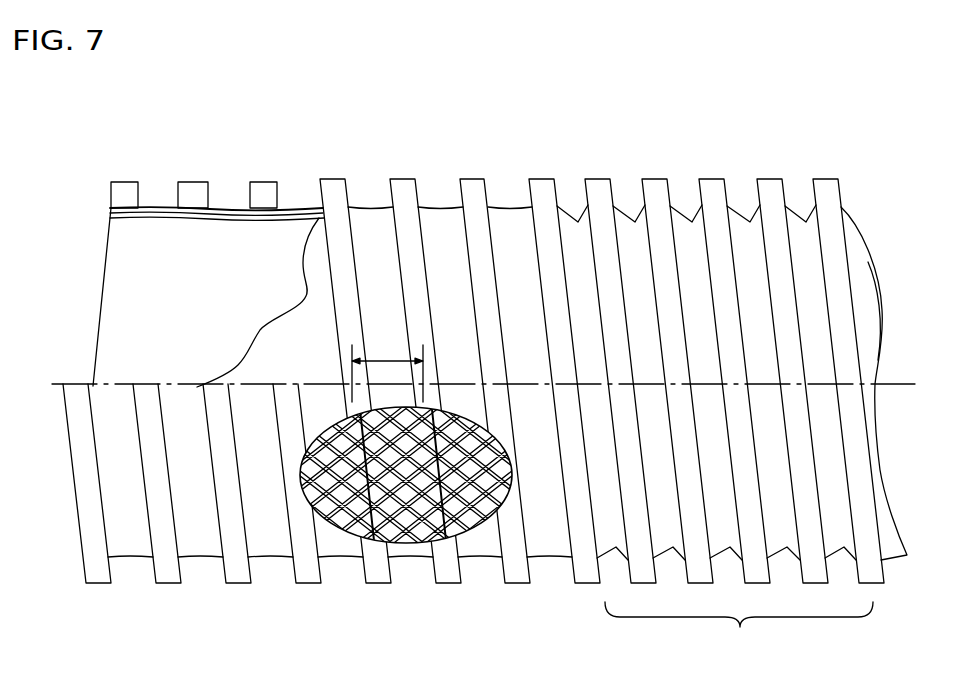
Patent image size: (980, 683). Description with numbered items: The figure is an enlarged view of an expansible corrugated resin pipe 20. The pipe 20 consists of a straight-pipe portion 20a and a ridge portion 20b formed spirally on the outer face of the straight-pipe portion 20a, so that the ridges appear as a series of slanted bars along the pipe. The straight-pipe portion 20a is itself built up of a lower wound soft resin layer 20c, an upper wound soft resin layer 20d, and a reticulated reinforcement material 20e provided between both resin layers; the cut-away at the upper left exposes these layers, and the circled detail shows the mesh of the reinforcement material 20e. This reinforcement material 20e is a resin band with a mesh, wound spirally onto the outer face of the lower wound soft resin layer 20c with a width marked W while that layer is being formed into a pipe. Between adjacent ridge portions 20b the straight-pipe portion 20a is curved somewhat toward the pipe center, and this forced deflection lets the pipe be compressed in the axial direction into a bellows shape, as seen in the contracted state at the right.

The expansible corrugated resin pipe 20 is at (573, 143).
The straight-pipe portion 20a is at (155, 197).
The ridge portion 20b is at (187, 171).
The lower wound soft resin layer 20c is at (290, 216).
The upper wound soft resin layer 20d is at (294, 208).
The reticulated reinforcement material 20e is at (184, 217).